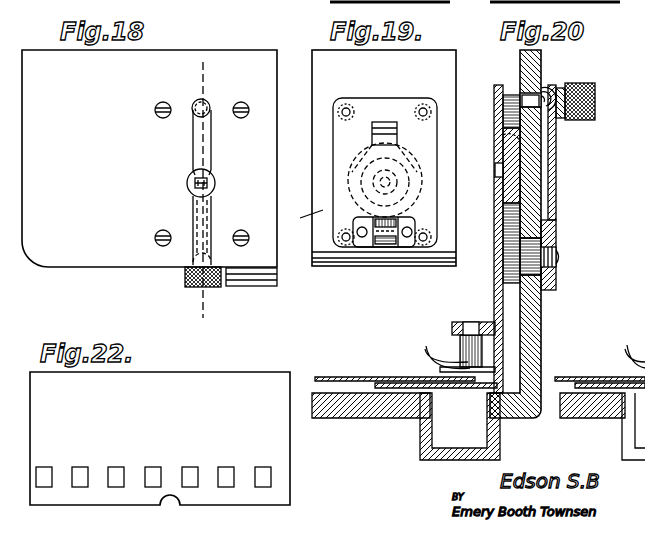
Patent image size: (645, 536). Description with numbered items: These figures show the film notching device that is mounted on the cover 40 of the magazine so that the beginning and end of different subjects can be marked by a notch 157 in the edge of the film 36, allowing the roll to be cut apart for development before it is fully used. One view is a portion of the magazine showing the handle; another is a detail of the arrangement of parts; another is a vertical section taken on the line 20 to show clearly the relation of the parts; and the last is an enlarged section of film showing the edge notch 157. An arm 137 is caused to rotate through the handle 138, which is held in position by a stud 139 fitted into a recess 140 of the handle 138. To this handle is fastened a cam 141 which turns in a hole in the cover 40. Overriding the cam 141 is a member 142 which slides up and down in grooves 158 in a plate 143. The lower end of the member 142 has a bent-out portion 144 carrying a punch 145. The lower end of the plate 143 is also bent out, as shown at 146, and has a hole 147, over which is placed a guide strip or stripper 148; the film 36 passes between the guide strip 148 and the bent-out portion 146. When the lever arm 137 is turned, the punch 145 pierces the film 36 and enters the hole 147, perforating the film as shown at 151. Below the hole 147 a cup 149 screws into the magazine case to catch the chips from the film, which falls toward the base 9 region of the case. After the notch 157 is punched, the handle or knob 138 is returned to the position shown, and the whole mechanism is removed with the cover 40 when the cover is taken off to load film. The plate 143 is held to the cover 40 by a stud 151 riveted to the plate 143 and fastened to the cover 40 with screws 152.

In FIG. 20, the base 9 is at (327, 405).
In FIG. 18, the section line 20 is at (185, 68).
In FIG. 19, the film 36 is at (280, 114).
In FIG. 20, the film 36 is at (335, 376).
In FIG. 22, the film 36 is at (228, 380).
In FIG. 18, the cover 40 is at (73, 255).
In FIG. 19, the cover 40 is at (378, 158).
In FIG. 20, the cover 40 is at (541, 322).
In FIG. 18, the arm 137 is at (194, 146).
In FIG. 20, the arm 137 is at (556, 180).
In FIG. 18, the handle 138 is at (206, 102).
In FIG. 20, the handle 138 is at (595, 103).
In FIG. 20, the stud 139 is at (549, 92).
In FIG. 20, the recess 140 is at (570, 120).
In FIG. 19, the cam 141 is at (375, 180).
In FIG. 20, the cam 141 is at (556, 240).
In FIG. 20, the member 142 is at (503, 183).
In FIG. 19, the plate 143 is at (364, 104).
In FIG. 20, the plate 143 is at (496, 93).
In FIG. 20, the bent-out portion 144 is at (455, 330).
In FIG. 20, the punch 145 is at (459, 346).
In FIG. 20, the bent-out portion 146 is at (400, 408).
In FIG. 20, the hole 147 is at (466, 388).
In FIG. 19, the guide strip 148 is at (376, 240).
In FIG. 20, the guide strip 148 is at (425, 350).
In FIG. 18, the cup 149 is at (184, 278).
In FIG. 19, the cup 149 is at (375, 4).
In FIG. 20, the cup 149 is at (440, 440).
In FIG. 20, the stud 151 is at (510, 95).
In FIG. 18, the screws 152 is at (242, 118).
In FIG. 22, the notch 157 is at (170, 503).
In FIG. 19, the grooves 158 is at (396, 135).
In FIG. 20, the grooves 158 is at (499, 157).